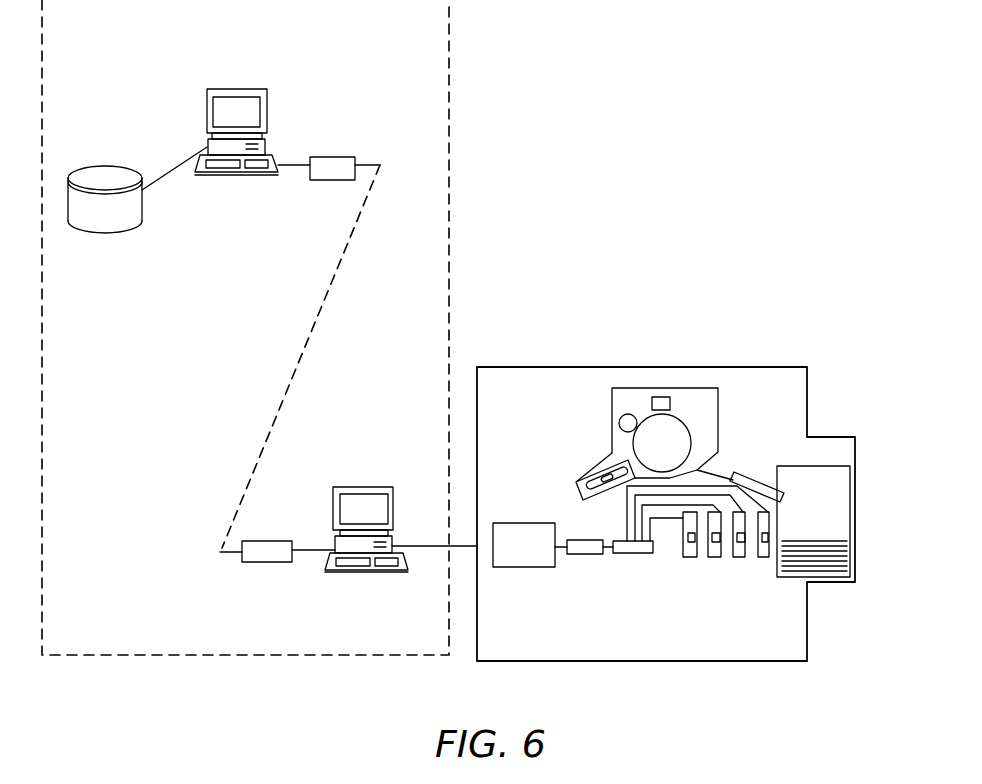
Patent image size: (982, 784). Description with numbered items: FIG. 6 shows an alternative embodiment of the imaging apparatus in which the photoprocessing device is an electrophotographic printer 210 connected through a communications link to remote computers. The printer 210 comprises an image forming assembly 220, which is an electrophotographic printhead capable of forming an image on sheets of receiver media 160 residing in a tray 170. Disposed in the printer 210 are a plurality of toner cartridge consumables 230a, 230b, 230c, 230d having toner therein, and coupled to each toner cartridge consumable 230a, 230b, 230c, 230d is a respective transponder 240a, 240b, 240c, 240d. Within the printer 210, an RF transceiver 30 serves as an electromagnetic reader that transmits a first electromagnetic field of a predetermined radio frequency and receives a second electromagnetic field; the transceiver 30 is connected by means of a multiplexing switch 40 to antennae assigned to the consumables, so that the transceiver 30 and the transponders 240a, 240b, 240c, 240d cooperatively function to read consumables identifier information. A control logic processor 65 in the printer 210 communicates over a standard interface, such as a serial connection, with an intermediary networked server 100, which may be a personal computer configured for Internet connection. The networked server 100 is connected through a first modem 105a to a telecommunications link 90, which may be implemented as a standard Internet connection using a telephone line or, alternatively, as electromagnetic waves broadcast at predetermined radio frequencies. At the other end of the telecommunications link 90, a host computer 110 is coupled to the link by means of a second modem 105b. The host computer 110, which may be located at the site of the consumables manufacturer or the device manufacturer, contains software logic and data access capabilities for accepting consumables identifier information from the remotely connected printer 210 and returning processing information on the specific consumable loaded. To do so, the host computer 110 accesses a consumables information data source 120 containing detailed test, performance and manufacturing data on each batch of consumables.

The telecommunications link 90 is at (353, 273).
The host computer 110 is at (238, 89).
The consumables information data source 120 is at (107, 173).
The second modem 105b is at (332, 157).
The first modem 105a is at (267, 562).
The networked server 100 is at (373, 487).
The electrophotographic printer 210 is at (613, 337).
The image forming assembly 220 is at (687, 388).
The control logic processor 65 is at (510, 522).
The RF transceiver 30 is at (573, 539).
The multiplexing switch 40 is at (620, 541).
The tray 170 is at (790, 466).
The receiver media 160 is at (825, 542).
The transponder 240a is at (686, 540).
The transponder 240b is at (716, 556).
The transponder 240c is at (738, 556).
The transponder 240d is at (762, 557).
The toner cartridge consumable 230a is at (708, 556).
The toner cartridge consumable 230b is at (710, 558).
The toner cartridge consumable 230c is at (758, 557).
The toner cartridge consumable 230d is at (768, 517).